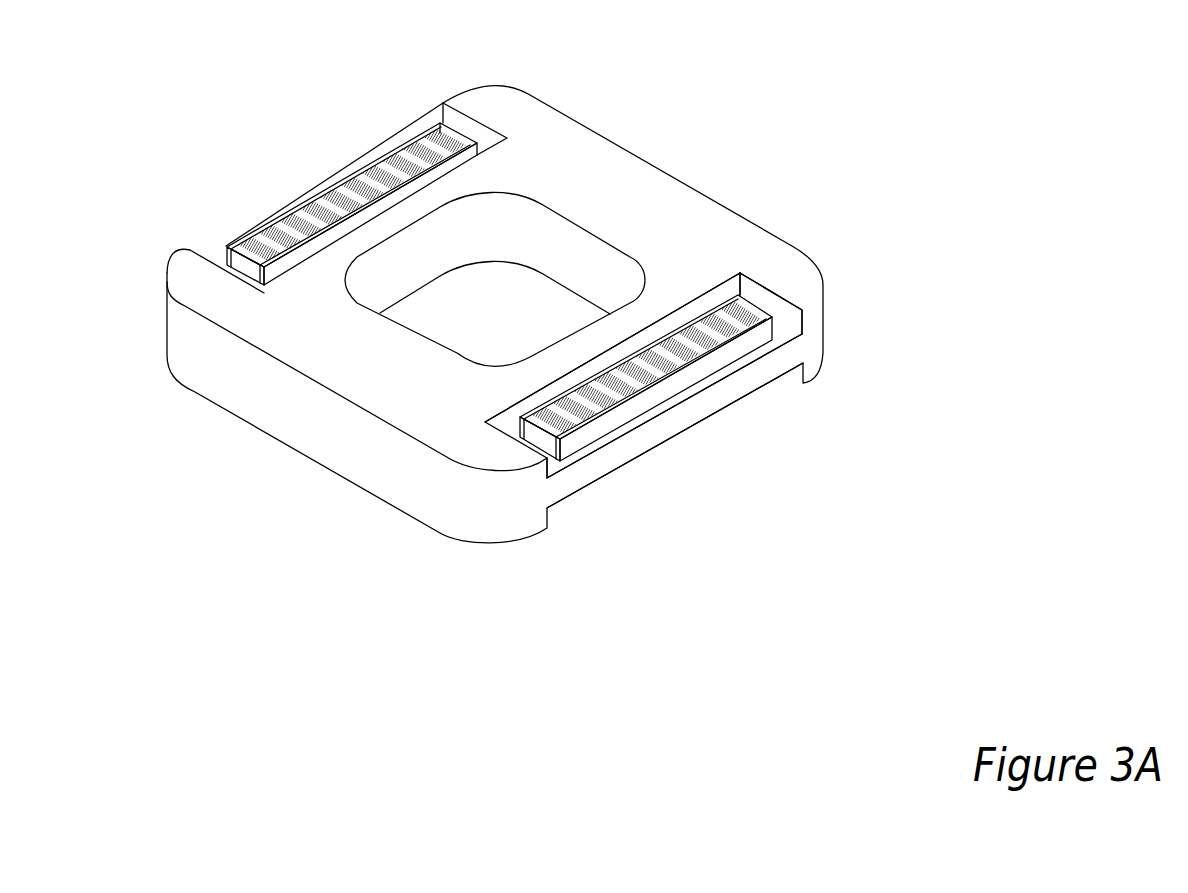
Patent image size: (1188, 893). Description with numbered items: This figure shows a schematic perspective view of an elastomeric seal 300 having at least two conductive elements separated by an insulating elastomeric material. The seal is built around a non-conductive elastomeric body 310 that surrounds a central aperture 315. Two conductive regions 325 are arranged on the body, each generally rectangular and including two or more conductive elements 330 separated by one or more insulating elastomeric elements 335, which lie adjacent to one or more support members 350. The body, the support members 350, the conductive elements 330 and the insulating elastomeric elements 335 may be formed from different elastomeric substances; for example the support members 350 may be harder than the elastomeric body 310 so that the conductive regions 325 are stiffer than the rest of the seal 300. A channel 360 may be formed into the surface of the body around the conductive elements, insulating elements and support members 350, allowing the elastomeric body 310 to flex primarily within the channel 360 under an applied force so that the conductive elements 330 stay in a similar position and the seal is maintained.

The elastomeric seal 300 is at (540, 305).
The non-conductive elastomeric body 310 is at (489, 314).
The aperture 315 is at (552, 312).
The conductive region 325 is at (308, 177).
The conductive element 330 is at (570, 435).
The insulating elastomeric element 335 is at (653, 378).
The support member 350 is at (735, 352).
The channel 360 is at (770, 302).